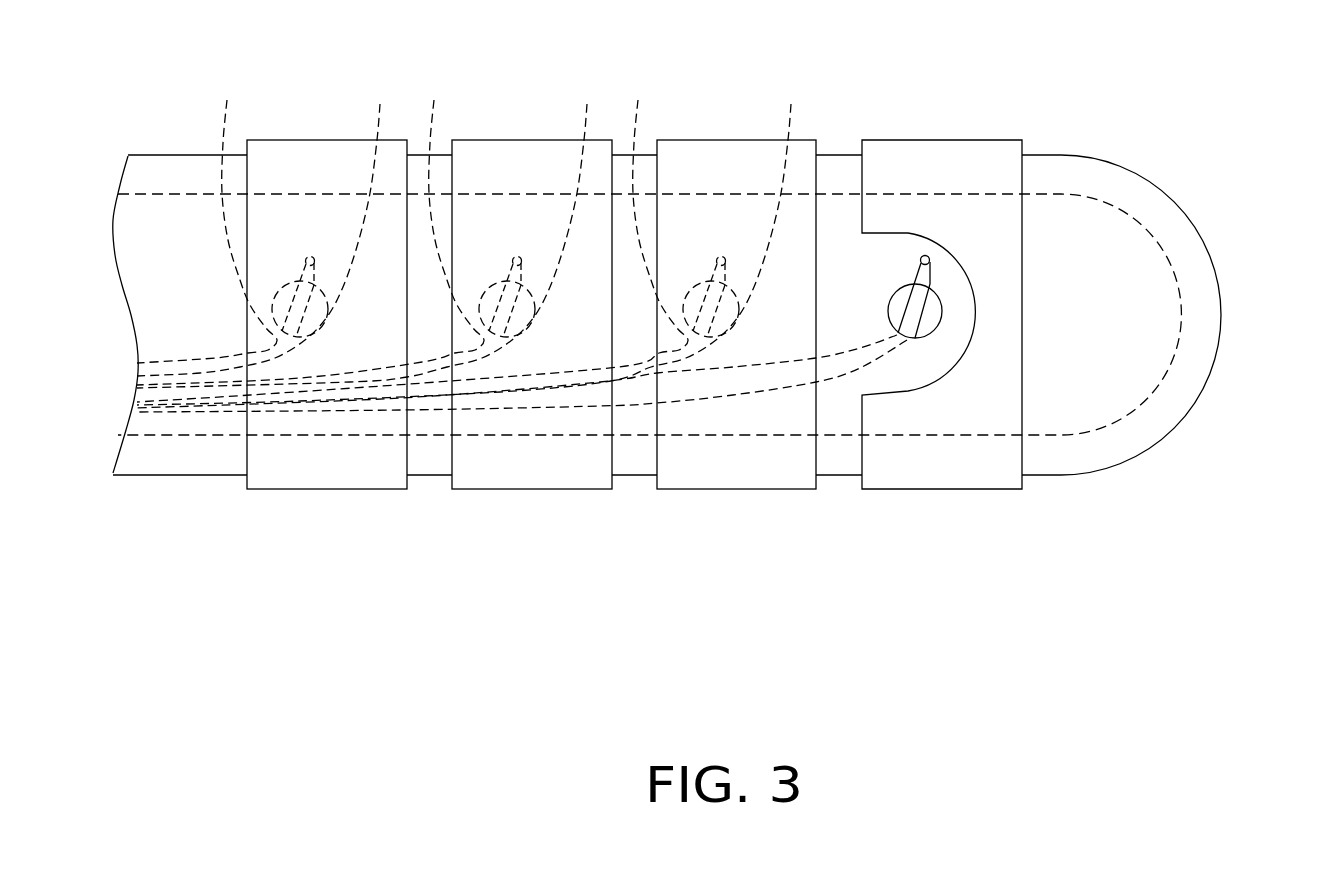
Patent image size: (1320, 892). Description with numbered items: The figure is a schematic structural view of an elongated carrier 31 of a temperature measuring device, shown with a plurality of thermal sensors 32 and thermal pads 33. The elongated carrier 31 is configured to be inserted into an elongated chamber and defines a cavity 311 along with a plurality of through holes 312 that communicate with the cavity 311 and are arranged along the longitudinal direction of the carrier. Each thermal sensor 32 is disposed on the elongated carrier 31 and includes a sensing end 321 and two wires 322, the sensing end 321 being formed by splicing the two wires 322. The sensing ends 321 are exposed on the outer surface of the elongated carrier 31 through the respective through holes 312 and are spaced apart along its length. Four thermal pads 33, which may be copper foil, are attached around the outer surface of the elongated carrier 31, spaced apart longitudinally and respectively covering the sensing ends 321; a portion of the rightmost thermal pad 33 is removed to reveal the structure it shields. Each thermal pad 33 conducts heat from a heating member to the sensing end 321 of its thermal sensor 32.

The elongated carrier 31 is at (1145, 177).
The cavity 311 is at (1125, 262).
The through hole 312 is at (1080, 103).
The thermal sensor 32 is at (920, 528).
The sensing end 321 is at (930, 287).
The wire 322 is at (913, 272).
The thermal pad 33 is at (335, 138).